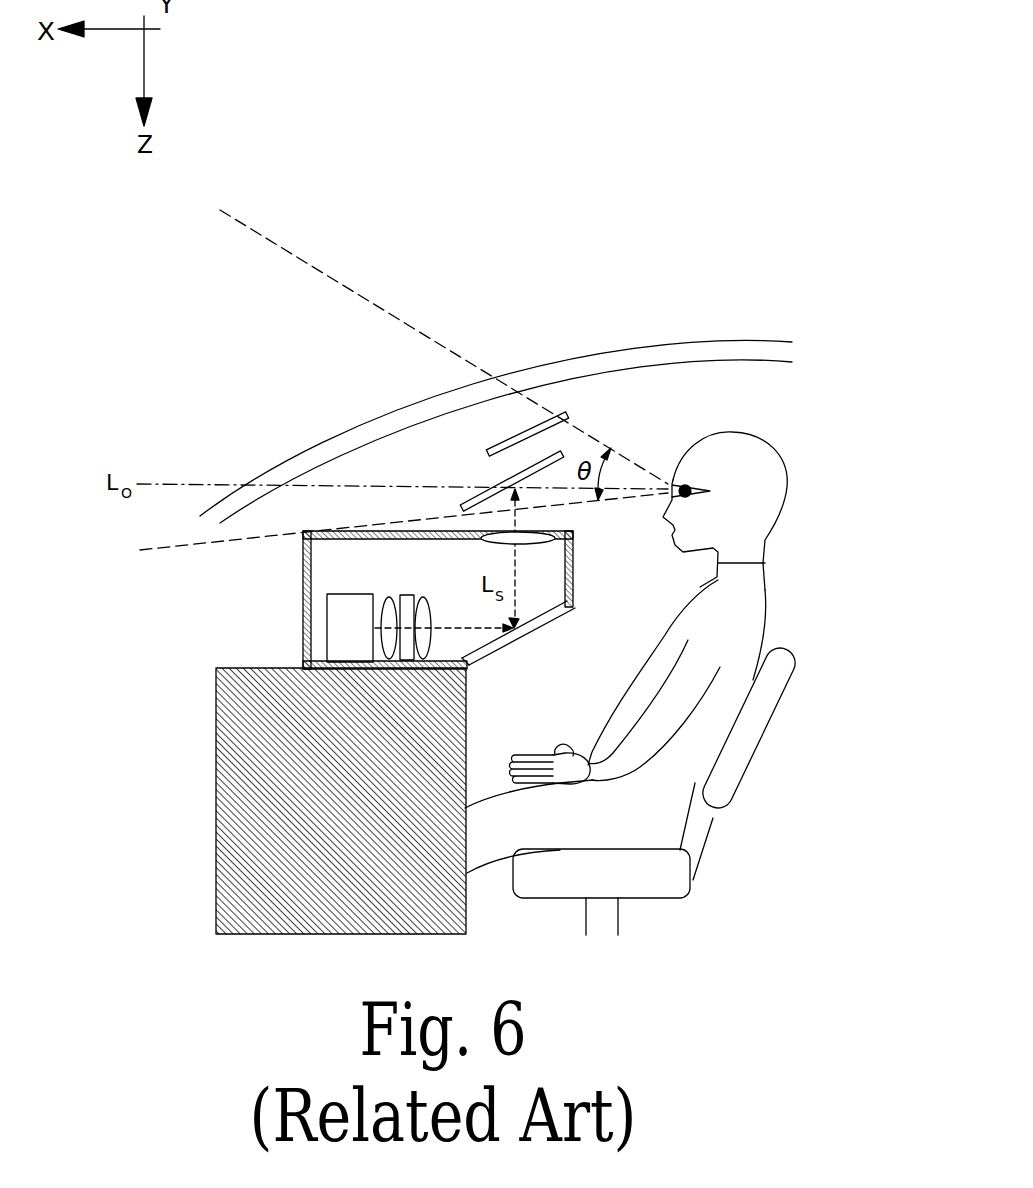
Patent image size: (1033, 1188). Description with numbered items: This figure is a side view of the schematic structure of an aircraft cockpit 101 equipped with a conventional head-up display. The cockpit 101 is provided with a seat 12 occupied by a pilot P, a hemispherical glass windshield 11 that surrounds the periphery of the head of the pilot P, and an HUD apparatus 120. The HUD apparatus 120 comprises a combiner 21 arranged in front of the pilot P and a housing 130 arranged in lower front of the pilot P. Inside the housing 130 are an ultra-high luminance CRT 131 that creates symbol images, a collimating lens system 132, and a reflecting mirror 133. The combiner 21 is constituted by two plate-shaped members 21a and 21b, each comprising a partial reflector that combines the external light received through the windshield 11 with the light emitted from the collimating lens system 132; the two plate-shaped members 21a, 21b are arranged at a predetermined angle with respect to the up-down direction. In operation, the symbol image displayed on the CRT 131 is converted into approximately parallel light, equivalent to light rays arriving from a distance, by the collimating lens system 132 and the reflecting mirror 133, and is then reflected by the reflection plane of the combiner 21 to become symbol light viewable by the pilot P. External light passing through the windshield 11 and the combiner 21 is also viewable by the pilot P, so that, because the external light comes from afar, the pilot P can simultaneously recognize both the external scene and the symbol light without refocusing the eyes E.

The aircraft cockpit 101 is at (679, 129).
The HUD apparatus 120 is at (467, 401).
The ultra-high luminance CRT 131 is at (352, 594).
The housing 130 is at (389, 597).
The collimating lens system 132 is at (423, 597).
The reflecting mirror 133 is at (553, 600).
The combiner 21 is at (524, 357).
The plate-shaped member 21a is at (505, 442).
The plate-shaped member 21b is at (512, 470).
The windshield 11 is at (727, 340).
The seat 12 is at (765, 733).
The eyes E is at (697, 483).
The pilot P is at (653, 818).